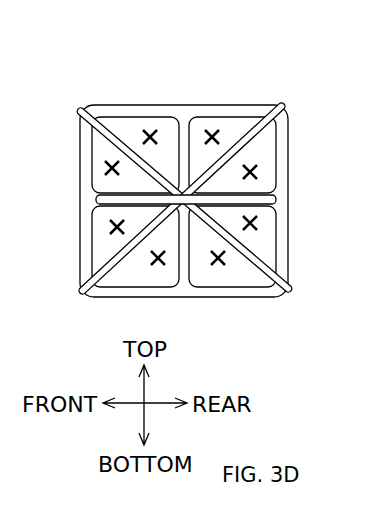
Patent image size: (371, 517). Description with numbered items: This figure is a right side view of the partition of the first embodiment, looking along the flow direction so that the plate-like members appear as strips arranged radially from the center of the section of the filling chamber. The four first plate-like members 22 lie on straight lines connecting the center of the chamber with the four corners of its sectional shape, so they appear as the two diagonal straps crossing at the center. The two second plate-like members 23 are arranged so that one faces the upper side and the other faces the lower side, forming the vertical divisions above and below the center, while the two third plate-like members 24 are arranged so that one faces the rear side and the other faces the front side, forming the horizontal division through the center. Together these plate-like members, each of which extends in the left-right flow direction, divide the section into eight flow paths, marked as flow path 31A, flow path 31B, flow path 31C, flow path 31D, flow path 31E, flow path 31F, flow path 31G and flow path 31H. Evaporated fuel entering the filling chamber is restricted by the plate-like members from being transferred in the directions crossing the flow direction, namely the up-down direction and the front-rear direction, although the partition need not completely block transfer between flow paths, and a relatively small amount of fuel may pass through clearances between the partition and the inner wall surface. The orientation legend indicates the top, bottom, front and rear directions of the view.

The first plate-like members 22 is at (110, 106).
The second plate-like members 23 is at (190, 108).
The third plate-like members 24 is at (283, 200).
The flow path 31A is at (87, 150).
The flow path 31B is at (152, 107).
The flow path 31C is at (222, 107).
The flow path 31D is at (280, 170).
The flow path 31E is at (287, 230).
The flow path 31F is at (247, 291).
The flow path 31G is at (175, 295).
The flow path 31H is at (86, 240).